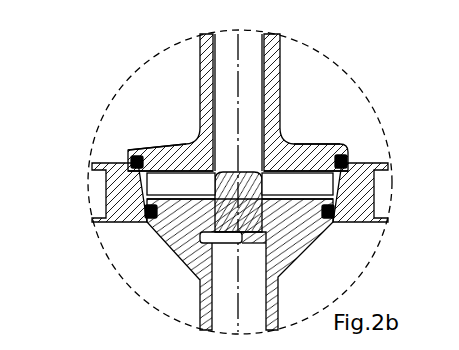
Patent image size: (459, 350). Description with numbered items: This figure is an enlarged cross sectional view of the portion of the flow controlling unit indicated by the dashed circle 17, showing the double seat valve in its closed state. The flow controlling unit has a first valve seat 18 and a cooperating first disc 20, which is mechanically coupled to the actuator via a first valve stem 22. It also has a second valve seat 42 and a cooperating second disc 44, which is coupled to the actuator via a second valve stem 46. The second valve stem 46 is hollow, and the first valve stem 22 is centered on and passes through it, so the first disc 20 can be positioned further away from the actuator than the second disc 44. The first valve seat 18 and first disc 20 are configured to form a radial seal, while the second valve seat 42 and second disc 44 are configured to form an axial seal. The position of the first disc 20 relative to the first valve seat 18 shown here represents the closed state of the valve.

The dashed circle 17 is at (135, 292).
The first valve seat 18 is at (148, 211).
The first disc 20 is at (168, 222).
The first valve stem 22 is at (233, 68).
The second valve seat 42 is at (132, 164).
The second disc 44 is at (165, 145).
The second valve stem 46 is at (199, 90).